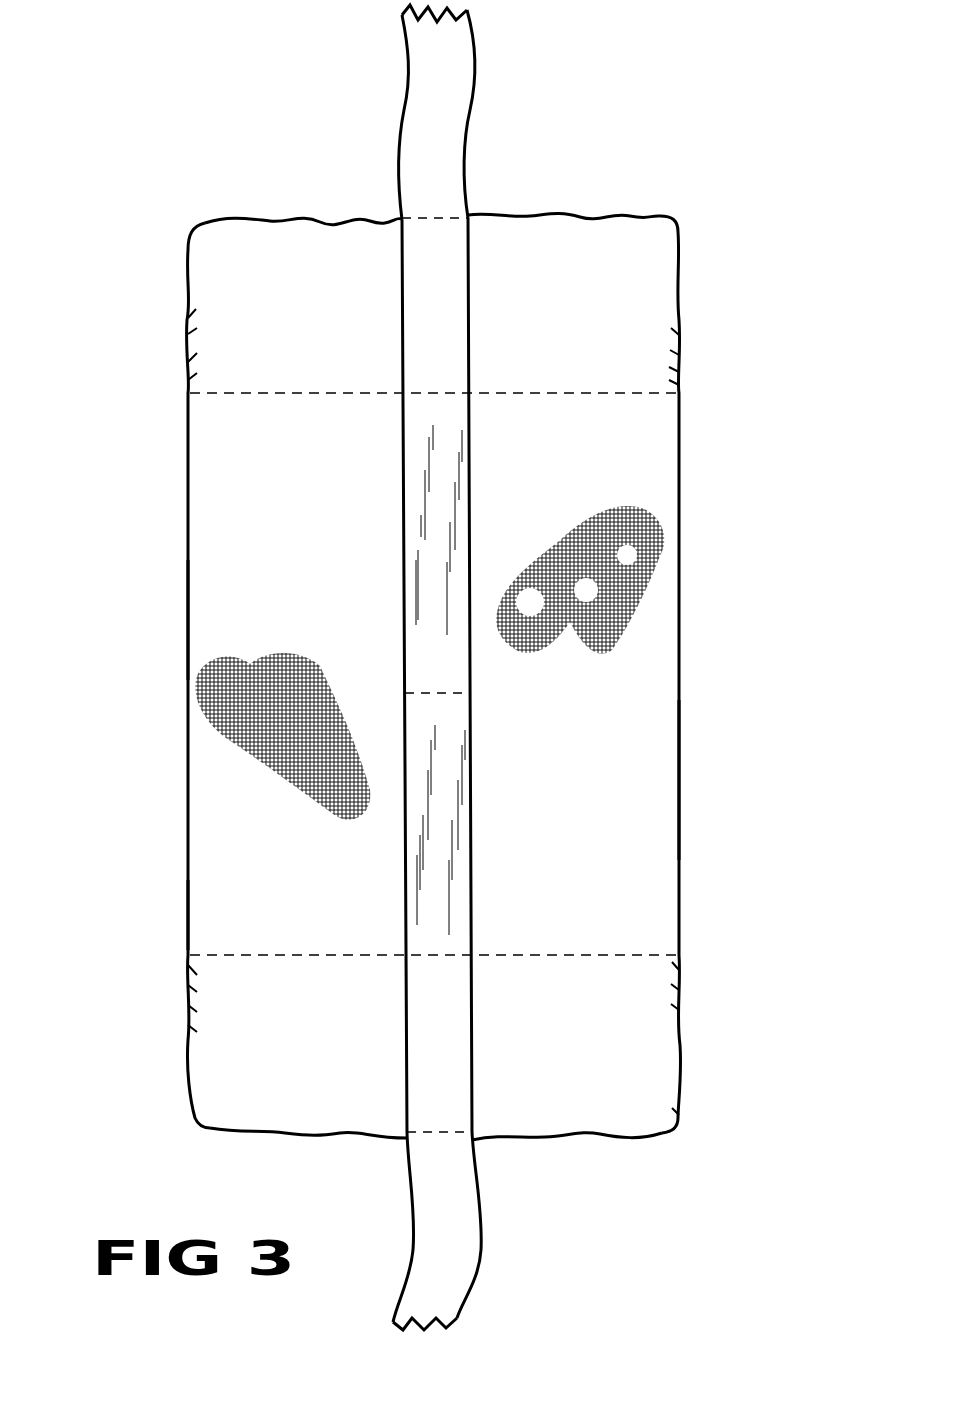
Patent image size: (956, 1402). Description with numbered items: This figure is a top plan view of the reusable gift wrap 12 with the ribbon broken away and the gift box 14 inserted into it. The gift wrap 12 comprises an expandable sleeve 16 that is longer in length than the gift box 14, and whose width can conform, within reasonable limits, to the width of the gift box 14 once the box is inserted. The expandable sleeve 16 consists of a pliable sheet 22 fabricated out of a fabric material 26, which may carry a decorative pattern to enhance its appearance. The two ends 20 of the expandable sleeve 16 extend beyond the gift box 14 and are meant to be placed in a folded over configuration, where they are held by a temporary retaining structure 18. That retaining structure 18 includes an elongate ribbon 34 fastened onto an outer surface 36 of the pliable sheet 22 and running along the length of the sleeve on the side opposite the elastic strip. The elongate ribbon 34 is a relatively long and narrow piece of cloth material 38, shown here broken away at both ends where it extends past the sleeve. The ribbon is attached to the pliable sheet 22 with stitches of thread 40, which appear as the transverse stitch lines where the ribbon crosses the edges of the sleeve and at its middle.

The reusable gift wrap 12 is at (440, 677).
The gift box 14 is at (211, 612).
The expandable sleeve 16 is at (178, 830).
The temporary retaining structure 18 is at (434, 667).
The ends of the expandable sleeve 20 is at (277, 221).
The pliable sheet 22 is at (667, 636).
The fabric material 26 is at (666, 773).
The elongate ribbon 34 is at (457, 61).
The outer surface of the pliable sheet 36 is at (222, 903).
The cloth material 38 is at (465, 1283).
The stitches of thread 40 is at (430, 213).